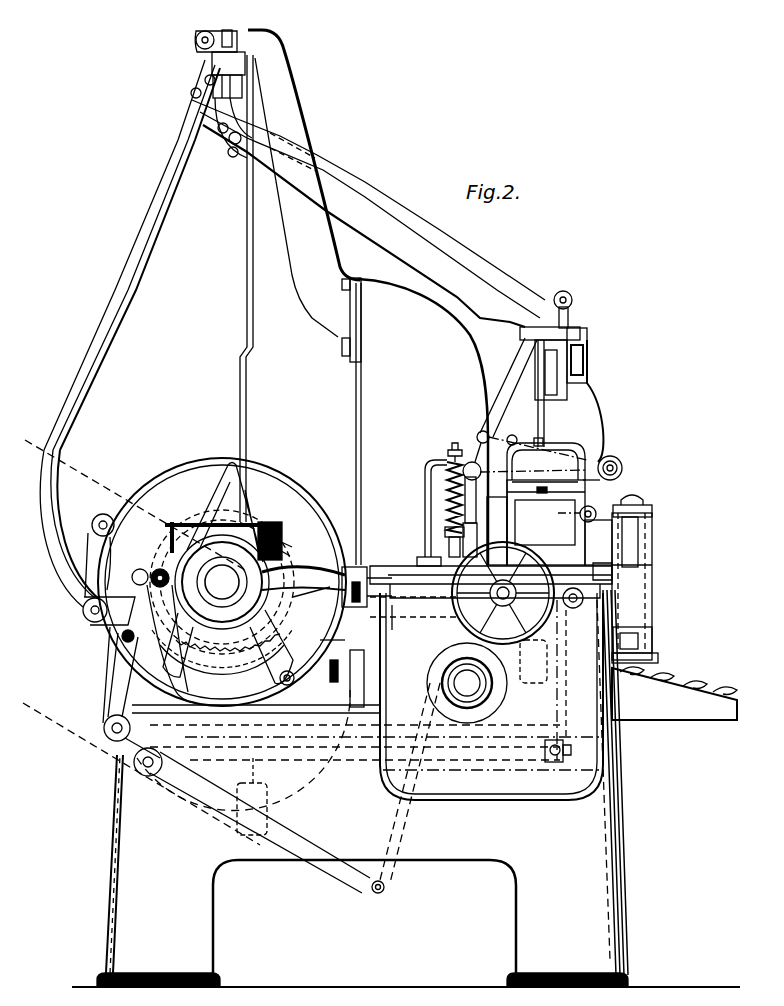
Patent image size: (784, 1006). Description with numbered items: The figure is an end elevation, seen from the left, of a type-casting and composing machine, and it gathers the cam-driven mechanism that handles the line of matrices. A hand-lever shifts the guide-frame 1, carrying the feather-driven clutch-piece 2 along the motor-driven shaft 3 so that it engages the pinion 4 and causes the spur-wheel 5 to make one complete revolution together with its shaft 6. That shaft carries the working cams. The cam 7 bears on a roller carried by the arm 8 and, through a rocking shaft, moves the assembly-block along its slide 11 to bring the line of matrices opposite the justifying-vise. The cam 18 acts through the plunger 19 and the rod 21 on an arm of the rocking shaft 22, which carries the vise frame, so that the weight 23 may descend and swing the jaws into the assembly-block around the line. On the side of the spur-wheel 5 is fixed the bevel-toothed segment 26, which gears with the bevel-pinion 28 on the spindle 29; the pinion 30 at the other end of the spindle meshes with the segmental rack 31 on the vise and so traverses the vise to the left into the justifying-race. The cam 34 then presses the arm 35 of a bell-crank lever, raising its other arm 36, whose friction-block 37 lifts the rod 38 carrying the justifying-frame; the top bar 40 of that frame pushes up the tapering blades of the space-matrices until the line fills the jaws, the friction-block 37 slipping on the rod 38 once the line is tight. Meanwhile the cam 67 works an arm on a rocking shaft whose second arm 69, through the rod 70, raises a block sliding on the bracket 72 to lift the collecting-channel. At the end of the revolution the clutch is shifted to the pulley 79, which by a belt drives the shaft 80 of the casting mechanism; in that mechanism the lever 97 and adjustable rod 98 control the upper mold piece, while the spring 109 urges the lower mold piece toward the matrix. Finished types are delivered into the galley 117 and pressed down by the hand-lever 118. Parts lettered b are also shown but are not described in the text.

The guide-frame 1 is at (406, 508).
The clutch-piece 2 is at (224, 634).
The shaft 3 is at (228, 667).
The pinion 4 is at (222, 663).
The spur-wheel 5 is at (222, 649).
The shaft 6 is at (332, 647).
The cam 7 is at (285, 543).
The arm 8 is at (222, 582).
The slide 11 is at (549, 504).
The cam 18 is at (262, 525).
The plunger 19 is at (358, 568).
The rod 21 is at (415, 621).
The rocking shaft 22 is at (674, 664).
The weight 23 is at (533, 661).
The bevel-toothed segment 26 is at (258, 500).
The bevel-pinion 28 is at (233, 601).
The spindle 29 is at (415, 598).
The pinion 30 is at (568, 640).
The segmental rack 31 is at (577, 609).
The cam 34 is at (126, 569).
The arm 35 is at (142, 745).
The arm 36 is at (375, 747).
The friction-block 37 is at (566, 757).
The rod 38 is at (569, 675).
The top bar 40 is at (556, 545).
The cam 67 is at (296, 667).
The arm 69 is at (362, 870).
The rod 70 is at (392, 832).
The bracket 72 is at (522, 404).
The pulley 79 is at (152, 678).
The shaft 80 is at (452, 683).
The lever 97 is at (486, 428).
The adjustable rod 98 is at (470, 462).
The spring 109 is at (447, 490).
The galley 117 is at (625, 588).
The hand-lever 118 is at (632, 499).
The blanks b is at (678, 679).